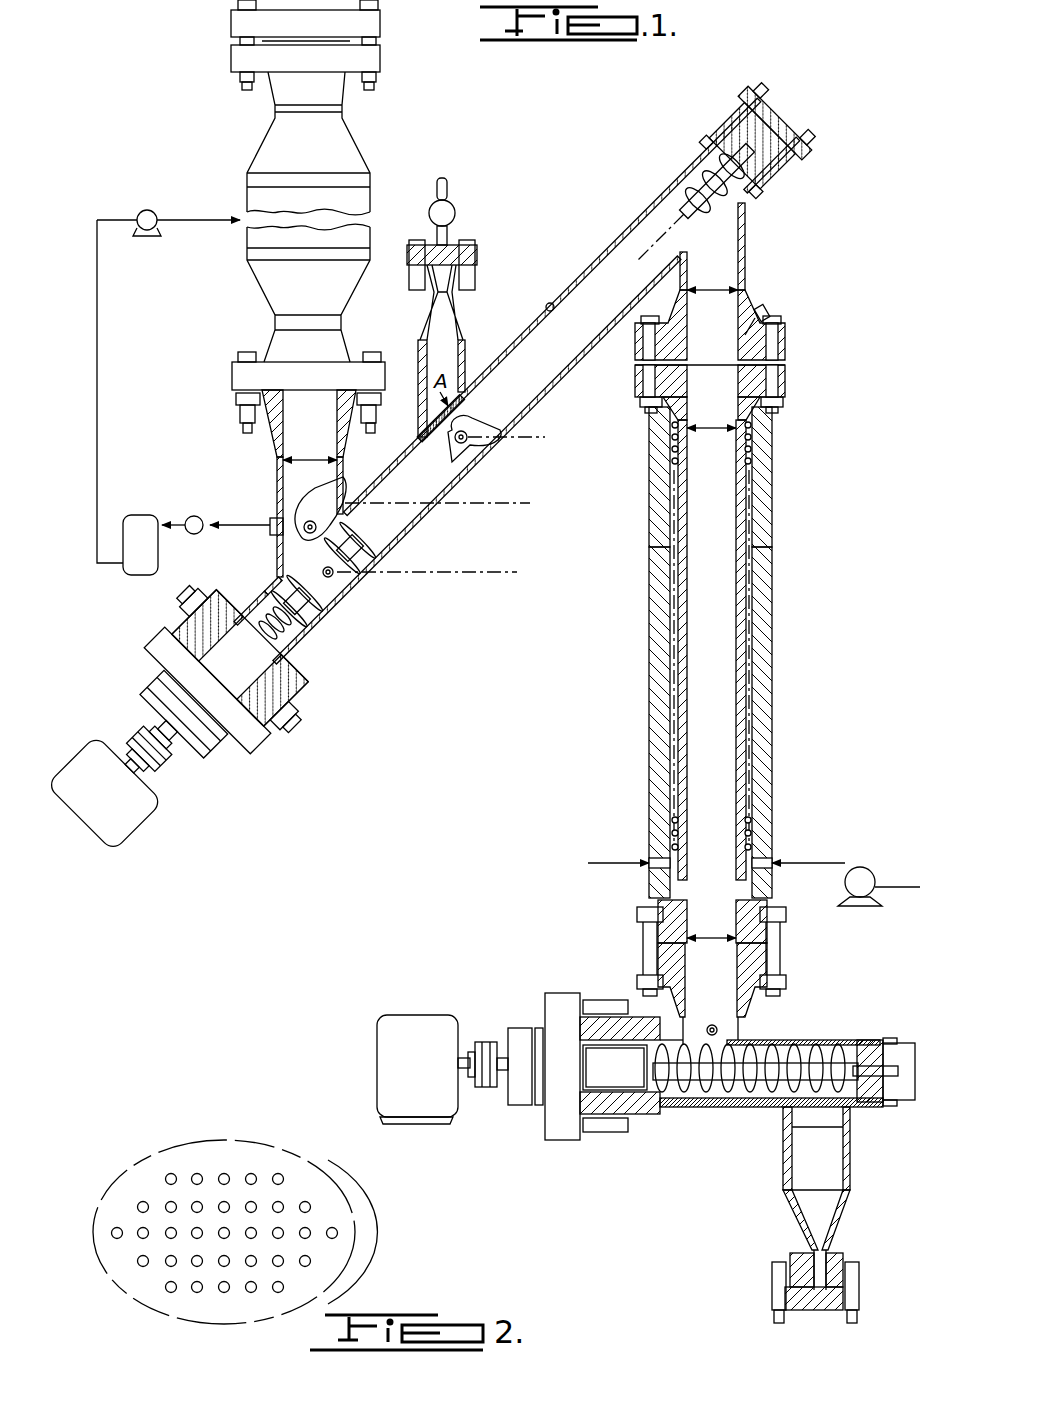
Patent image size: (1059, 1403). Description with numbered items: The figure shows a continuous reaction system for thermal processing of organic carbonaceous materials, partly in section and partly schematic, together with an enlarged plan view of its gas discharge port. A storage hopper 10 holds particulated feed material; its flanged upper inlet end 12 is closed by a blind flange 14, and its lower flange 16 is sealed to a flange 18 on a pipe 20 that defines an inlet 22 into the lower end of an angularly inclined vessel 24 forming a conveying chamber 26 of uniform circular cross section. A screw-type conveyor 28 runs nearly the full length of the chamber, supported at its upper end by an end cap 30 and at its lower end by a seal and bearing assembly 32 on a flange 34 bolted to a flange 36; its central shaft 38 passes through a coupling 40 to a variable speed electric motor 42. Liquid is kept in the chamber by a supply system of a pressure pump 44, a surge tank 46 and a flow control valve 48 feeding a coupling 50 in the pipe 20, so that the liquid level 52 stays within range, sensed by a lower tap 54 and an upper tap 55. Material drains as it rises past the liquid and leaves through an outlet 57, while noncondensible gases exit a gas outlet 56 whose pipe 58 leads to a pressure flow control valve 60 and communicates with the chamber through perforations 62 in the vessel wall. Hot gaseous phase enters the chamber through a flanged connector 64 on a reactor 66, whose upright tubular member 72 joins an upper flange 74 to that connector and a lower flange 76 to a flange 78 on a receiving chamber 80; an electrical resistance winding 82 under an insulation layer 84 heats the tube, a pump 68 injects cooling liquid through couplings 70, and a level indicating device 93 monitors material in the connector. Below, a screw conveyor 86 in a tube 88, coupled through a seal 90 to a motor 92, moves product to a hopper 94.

In FIG. 1, the storage hopper 10 is at (352, 153).
In FIG. 1, the flanged upper inlet end 12 is at (240, 62).
In FIG. 1, the blind flange 14 is at (240, 21).
In FIG. 1, the flange 16 is at (240, 373).
In FIG. 1, the flange 18 is at (235, 409).
In FIG. 1, the pipe or conduit 20 is at (277, 470).
In FIG. 1, the inlet 22 is at (270, 580).
In FIG. 1, the angularly inclined vessel 24 is at (548, 398).
In FIG. 2, the angularly inclined vessel 24 is at (338, 1206).
In FIG. 1, the conveying chamber 26 is at (548, 305).
In FIG. 1, the screw-type conveyor or auger 28 is at (745, 208).
In FIG. 1, the end cap 30 is at (777, 122).
In FIG. 1, the seal and bearing assembly 32 is at (204, 755).
In FIG. 1, the flange 34 is at (262, 742).
In FIG. 1, the flange 36 is at (285, 705).
In FIG. 1, the central shaft 38 is at (322, 620).
In FIG. 1, the coupling 40 is at (137, 722).
In FIG. 1, the variable speed electric motor 42 is at (122, 832).
In FIG. 1, the pressure pump 44 is at (150, 208).
In FIG. 1, the storage or surge tank 46 is at (145, 514).
In FIG. 1, the flow control valve 48 is at (202, 517).
In FIG. 1, the coupling 50 is at (270, 532).
In FIG. 1, the liquid level 52 is at (480, 512).
In FIG. 1, the lower coupling or tap 54 is at (365, 586).
In FIG. 1, the upper coupling or tap 55 is at (482, 457).
In FIG. 1, the gas outlet 56 is at (462, 346).
In FIG. 1, the outlet 57 is at (690, 253).
In FIG. 1, the pipe 58 is at (420, 302).
In FIG. 2, the pipe 58 is at (136, 1168).
In FIG. 1, the pressure flow control valve 60 is at (456, 210).
In FIG. 1, the perforations or ports 62 is at (448, 417).
In FIG. 2, the perforations or ports 62 is at (278, 1175).
In FIG. 1, the flanged connector 64 is at (746, 282).
In FIG. 1, the reactor 66 is at (775, 492).
In FIG. 1, the pressure pump 68 is at (866, 868).
In FIG. 1, the couplings 70 is at (652, 870).
In FIG. 1, the upright tubular member 72 is at (746, 661).
In FIG. 1, the upper flange 74 is at (786, 386).
In FIG. 1, the lower flange 76 is at (640, 926).
In FIG. 1, the flange 78 is at (787, 975).
In FIG. 1, the receiving chamber 80 is at (735, 1030).
In FIG. 1, the electrical resistance winding 82 is at (752, 440).
In FIG. 1, the layer of insulation material 84 is at (652, 713).
In FIG. 1, the screw conveyor 86 is at (832, 1052).
In FIG. 1, the tube 88 is at (690, 1102).
In FIG. 1, the seal 90 is at (516, 1030).
In FIG. 1, the variable speed electric motor 92 is at (418, 1015).
In FIG. 1, the level indicating device 93 is at (770, 310).
In FIG. 1, the hopper 94 is at (850, 1172).